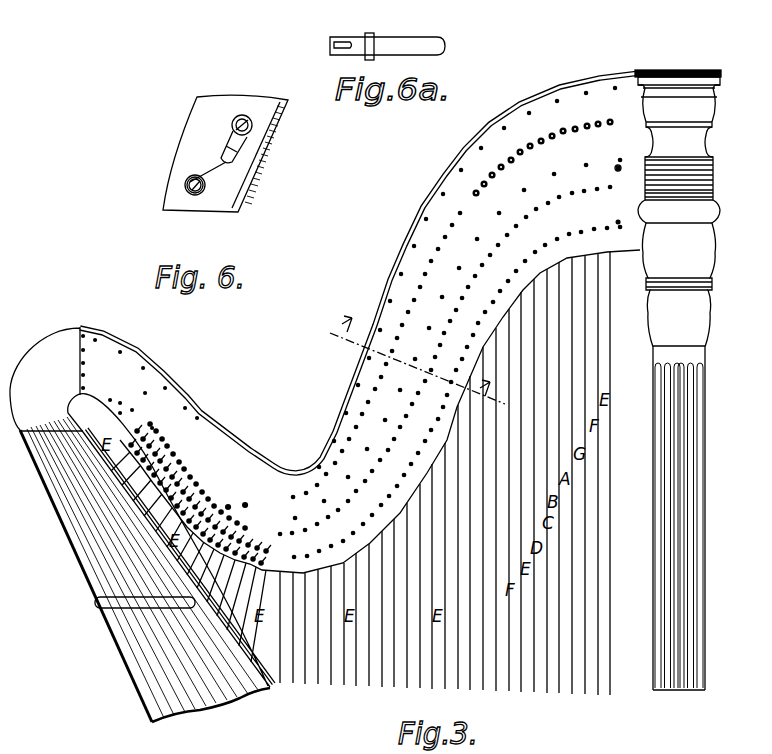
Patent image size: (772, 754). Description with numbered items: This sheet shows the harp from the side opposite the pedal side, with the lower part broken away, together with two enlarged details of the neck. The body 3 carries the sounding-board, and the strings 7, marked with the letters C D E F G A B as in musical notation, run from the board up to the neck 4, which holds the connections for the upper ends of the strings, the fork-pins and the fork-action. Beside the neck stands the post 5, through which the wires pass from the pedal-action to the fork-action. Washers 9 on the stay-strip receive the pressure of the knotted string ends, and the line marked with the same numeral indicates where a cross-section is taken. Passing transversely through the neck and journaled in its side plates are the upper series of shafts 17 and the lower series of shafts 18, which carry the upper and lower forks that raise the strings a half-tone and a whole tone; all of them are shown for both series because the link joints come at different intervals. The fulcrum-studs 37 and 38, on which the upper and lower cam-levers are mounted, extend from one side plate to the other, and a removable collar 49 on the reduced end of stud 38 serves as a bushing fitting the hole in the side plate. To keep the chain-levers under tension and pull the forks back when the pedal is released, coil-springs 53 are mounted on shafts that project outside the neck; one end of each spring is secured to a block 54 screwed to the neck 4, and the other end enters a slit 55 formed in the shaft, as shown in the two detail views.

In FIG. 3, the body 3 is at (119, 636).
In FIG. 3, the neck 4 is at (418, 258).
In FIG. 6, the neck 4 is at (200, 118).
In FIG. 3, the post 5 is at (716, 532).
In FIG. 3, the strings 7 is at (596, 566).
In FIG. 3, the washers 9 is at (410, 368).
In FIG. 3, the shafts of upper series 17 is at (548, 181).
In FIG. 6, the shafts of upper series 17 is at (196, 190).
In FIG. 6A, the shafts of upper series 17 is at (408, 42).
In FIG. 3, the shafts of lower series 18 is at (458, 335).
In FIG. 3, the fulcrum-stud 37 is at (618, 170).
In FIG. 3, the fulcrum-stud 38 is at (628, 226).
In FIG. 3, the collar 49 is at (616, 159).
In FIG. 3, the springs 53 is at (228, 505).
In FIG. 6, the springs 53 is at (178, 188).
In FIG. 3, the block 54 is at (246, 504).
In FIG. 6, the block 54 is at (250, 139).
In FIG. 6, the slit 55 is at (187, 172).
In FIG. 6A, the slit 55 is at (341, 36).